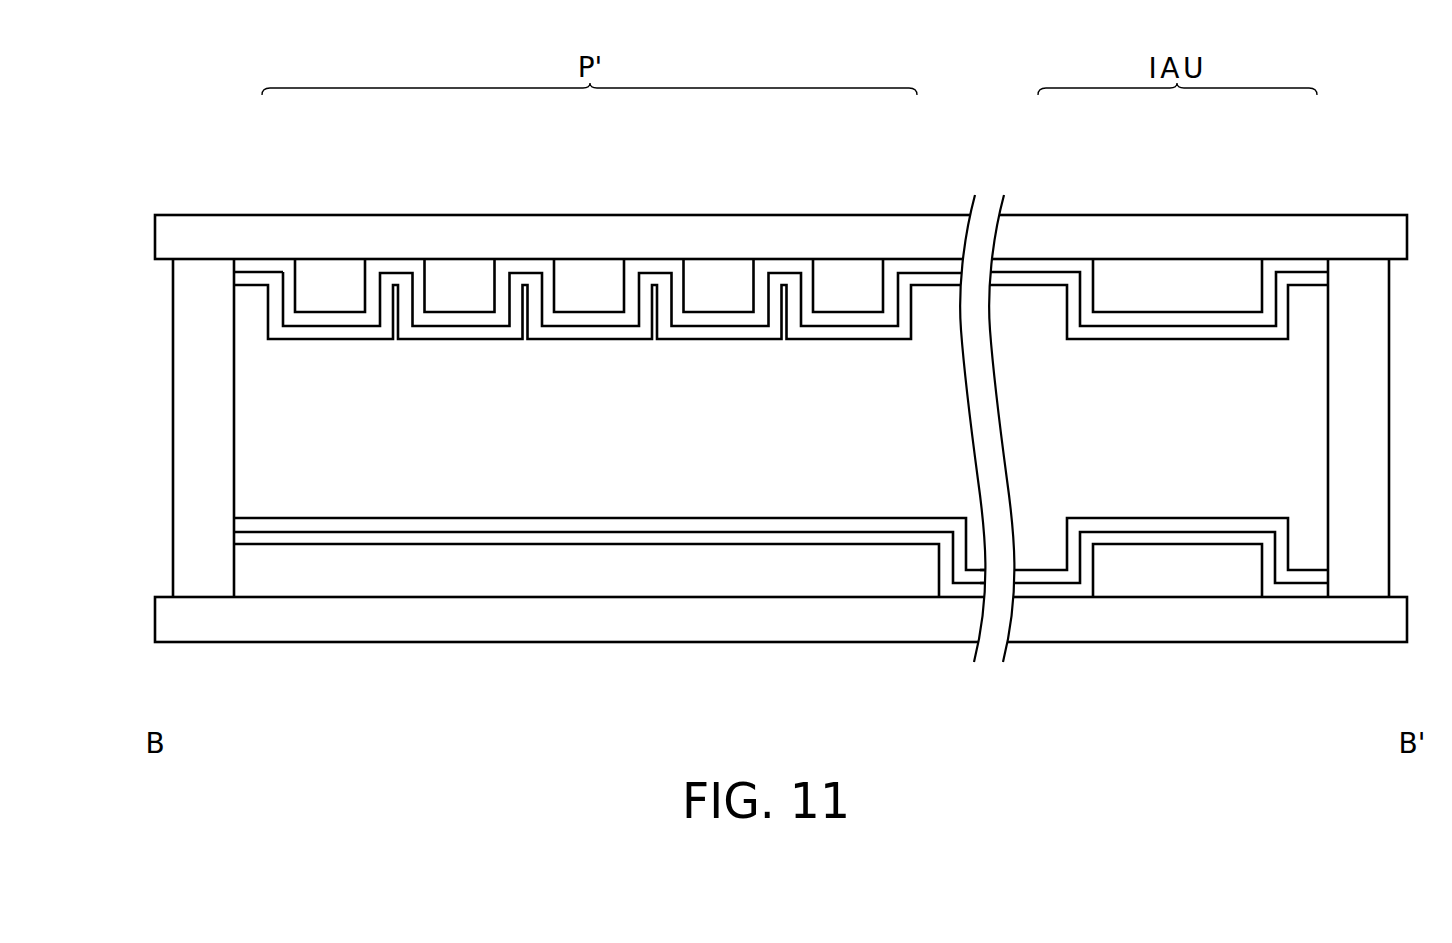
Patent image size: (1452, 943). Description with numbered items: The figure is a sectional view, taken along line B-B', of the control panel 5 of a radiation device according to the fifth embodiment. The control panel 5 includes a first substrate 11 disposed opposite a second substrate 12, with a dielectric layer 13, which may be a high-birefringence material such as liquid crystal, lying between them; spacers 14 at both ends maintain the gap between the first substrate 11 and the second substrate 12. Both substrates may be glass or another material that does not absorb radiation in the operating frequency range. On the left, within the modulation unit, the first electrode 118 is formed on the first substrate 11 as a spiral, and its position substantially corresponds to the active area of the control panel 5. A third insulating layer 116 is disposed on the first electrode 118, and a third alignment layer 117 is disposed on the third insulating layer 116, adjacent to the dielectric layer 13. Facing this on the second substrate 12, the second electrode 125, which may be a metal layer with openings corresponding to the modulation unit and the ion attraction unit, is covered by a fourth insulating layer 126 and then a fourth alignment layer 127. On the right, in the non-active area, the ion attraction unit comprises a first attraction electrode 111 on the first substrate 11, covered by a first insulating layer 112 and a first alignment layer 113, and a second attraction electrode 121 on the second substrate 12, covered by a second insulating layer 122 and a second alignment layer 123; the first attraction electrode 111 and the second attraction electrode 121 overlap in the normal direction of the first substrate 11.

The control panel 5 is at (83, 127).
The first substrate 11 is at (163, 236).
The second substrate 12 is at (163, 618).
The dielectric layer 13 is at (380, 455).
The spacers 14 is at (183, 377).
The first attraction electrode 111 is at (1176, 290).
The first insulating layer 112 is at (1282, 268).
The first alignment layer 113 is at (1307, 280).
The third insulating layer 116 is at (270, 268).
The third alignment layer 117 is at (247, 271).
The first electrode 118 is at (334, 290).
The second attraction electrode 121 is at (1177, 568).
The second insulating layer 122 is at (1282, 590).
The second alignment layer 123 is at (1307, 577).
The second electrode 125 is at (667, 568).
The fourth insulating layer 126 is at (762, 540).
The fourth alignment layer 127 is at (828, 523).